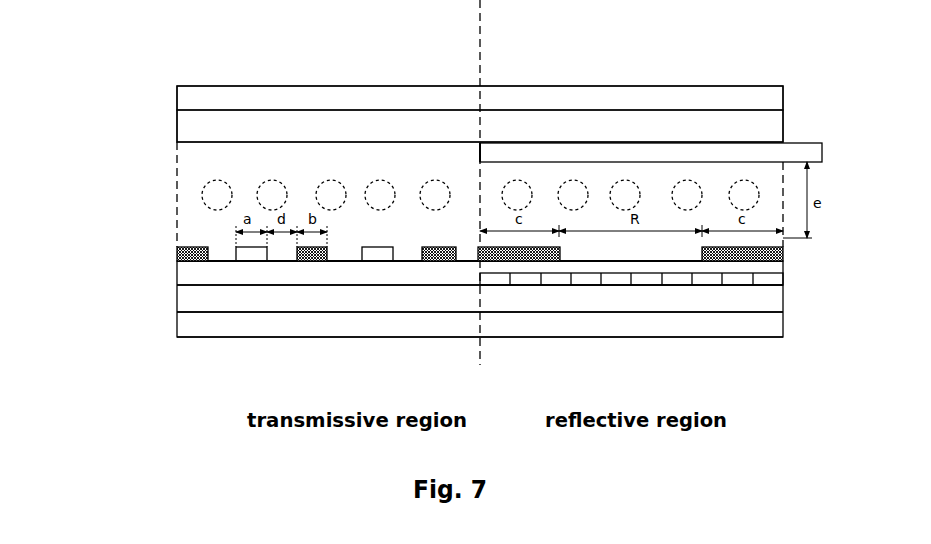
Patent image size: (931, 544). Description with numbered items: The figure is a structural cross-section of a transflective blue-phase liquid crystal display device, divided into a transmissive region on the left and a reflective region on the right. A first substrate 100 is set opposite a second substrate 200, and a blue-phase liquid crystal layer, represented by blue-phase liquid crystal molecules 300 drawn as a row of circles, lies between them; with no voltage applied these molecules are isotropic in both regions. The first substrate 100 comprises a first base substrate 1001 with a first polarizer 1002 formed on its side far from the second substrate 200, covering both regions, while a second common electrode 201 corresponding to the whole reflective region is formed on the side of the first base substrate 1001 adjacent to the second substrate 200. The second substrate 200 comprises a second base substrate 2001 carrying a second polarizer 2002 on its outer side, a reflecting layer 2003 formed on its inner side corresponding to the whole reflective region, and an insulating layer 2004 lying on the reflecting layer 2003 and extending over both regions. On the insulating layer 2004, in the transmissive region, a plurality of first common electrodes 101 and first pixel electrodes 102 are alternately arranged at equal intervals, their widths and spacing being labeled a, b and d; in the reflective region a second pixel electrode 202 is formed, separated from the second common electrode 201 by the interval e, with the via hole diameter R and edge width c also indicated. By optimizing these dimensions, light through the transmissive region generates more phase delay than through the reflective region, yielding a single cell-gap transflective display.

The first substrate 100 is at (65, 90).
The first base substrate 1001 is at (177, 127).
The first polarizer 1002 is at (177, 98).
The first common electrode 101 is at (252, 253).
The first pixel electrode 102 is at (177, 253).
The second substrate 200 is at (60, 305).
The second base substrate 2001 is at (202, 298).
The second polarizer 2002 is at (212, 327).
The reflecting layer 2003 is at (767, 280).
The insulating layer 2004 is at (200, 277).
The second common electrode 201 is at (760, 151).
The second pixel electrode 202 is at (783, 253).
The blue-phase liquid crystal molecules 300 is at (217, 195).